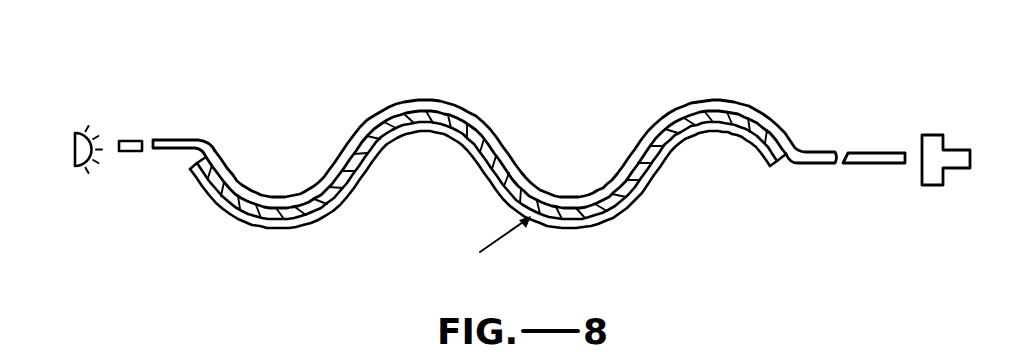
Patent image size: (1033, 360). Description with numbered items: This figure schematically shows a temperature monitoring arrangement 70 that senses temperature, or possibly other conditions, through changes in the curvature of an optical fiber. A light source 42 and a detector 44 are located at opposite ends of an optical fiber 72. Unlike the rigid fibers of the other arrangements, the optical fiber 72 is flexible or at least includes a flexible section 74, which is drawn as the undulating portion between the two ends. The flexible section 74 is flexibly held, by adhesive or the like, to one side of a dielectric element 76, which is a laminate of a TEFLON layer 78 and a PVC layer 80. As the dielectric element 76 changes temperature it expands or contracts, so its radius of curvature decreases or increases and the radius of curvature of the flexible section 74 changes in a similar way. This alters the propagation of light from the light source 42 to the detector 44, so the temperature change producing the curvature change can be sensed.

The temperature monitoring arrangement 70 is at (239, 88).
The optical fiber 72 is at (345, 162).
The flexible section 74 is at (218, 162).
The dielectric element 76 is at (260, 232).
The TEFLON layer 78 is at (313, 220).
The PVC layer 80 is at (352, 184).
The light source 42 is at (83, 134).
The detector 44 is at (930, 137).